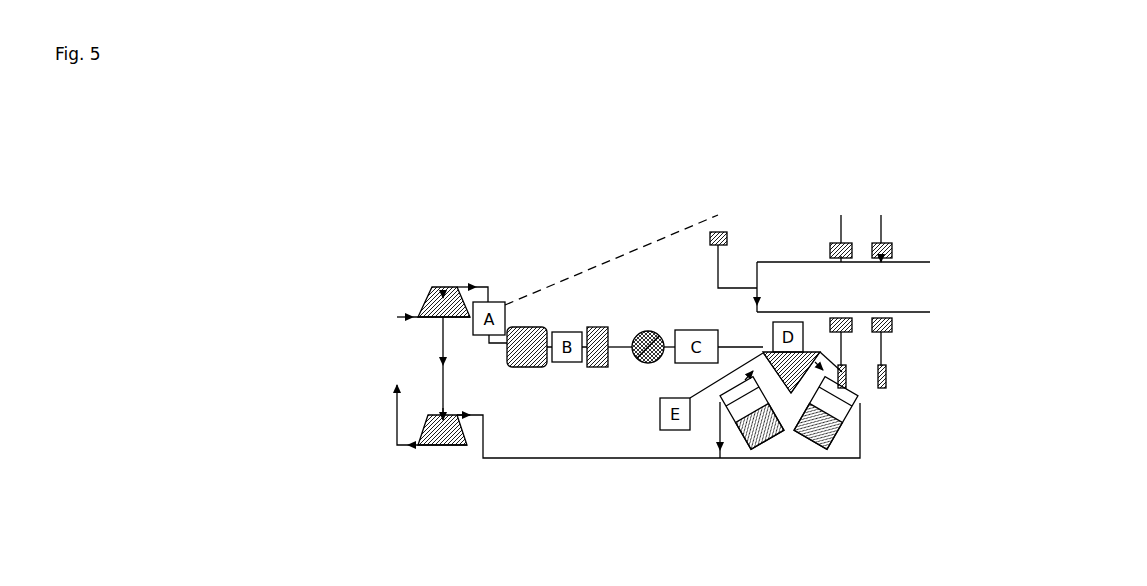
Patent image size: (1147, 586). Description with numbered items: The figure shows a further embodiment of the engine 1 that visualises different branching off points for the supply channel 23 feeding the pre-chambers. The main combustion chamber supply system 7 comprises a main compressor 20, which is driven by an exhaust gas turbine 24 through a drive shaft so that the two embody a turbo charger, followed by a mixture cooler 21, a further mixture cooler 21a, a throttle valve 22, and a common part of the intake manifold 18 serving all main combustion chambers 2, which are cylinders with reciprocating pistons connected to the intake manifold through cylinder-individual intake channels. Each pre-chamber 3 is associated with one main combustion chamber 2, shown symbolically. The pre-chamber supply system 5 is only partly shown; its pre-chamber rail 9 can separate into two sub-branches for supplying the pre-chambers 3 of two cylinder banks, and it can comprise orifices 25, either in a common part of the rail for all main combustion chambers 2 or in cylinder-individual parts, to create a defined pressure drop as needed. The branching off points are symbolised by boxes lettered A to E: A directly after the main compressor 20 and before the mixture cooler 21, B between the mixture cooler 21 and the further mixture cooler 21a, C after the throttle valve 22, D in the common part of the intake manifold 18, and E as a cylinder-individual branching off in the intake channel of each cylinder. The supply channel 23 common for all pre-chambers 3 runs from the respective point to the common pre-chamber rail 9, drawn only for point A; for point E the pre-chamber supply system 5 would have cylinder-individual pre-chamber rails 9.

The welding system 1 is at (1090, 90).
The main combustion chamber 2 is at (743, 430).
The pre-chamber 3 is at (850, 383).
The pre-chamber supply system 5 is at (921, 223).
The main combustion chamber supply system 7 is at (440, 262).
The pre-chamber rail 9 is at (733, 286).
The intake manifold 18 is at (793, 395).
The main compressor 20 is at (428, 300).
The mixture cooler 21 is at (527, 380).
The further mixture cooler 21a is at (600, 380).
The throttle valve 22 is at (653, 326).
The supply channel 23 is at (592, 268).
The exhaust gas turbine 24 is at (440, 458).
The orifice 25 is at (723, 226).